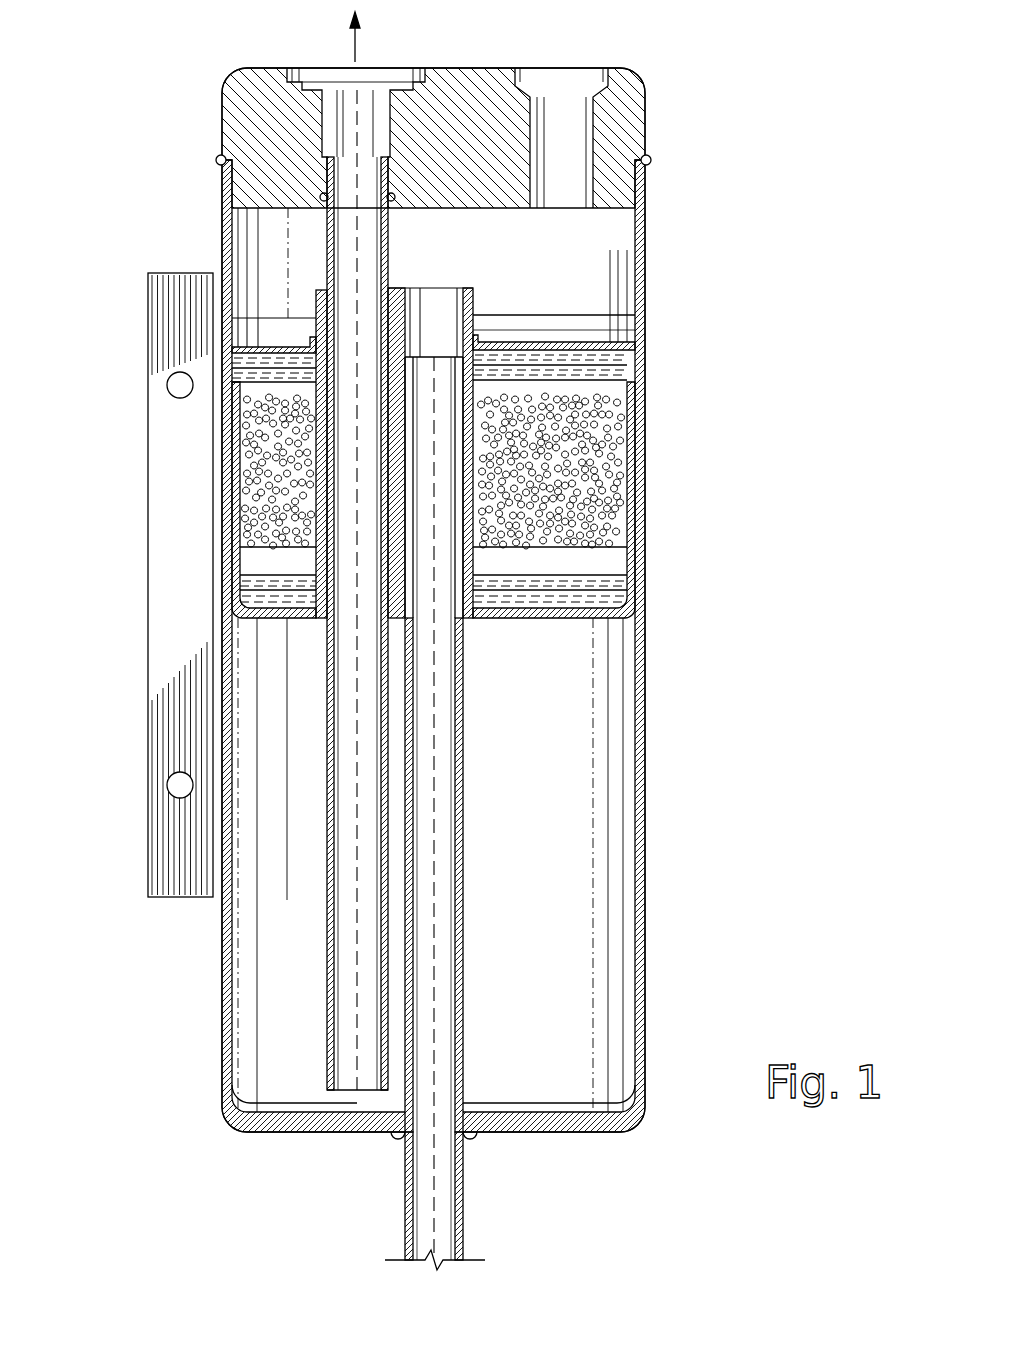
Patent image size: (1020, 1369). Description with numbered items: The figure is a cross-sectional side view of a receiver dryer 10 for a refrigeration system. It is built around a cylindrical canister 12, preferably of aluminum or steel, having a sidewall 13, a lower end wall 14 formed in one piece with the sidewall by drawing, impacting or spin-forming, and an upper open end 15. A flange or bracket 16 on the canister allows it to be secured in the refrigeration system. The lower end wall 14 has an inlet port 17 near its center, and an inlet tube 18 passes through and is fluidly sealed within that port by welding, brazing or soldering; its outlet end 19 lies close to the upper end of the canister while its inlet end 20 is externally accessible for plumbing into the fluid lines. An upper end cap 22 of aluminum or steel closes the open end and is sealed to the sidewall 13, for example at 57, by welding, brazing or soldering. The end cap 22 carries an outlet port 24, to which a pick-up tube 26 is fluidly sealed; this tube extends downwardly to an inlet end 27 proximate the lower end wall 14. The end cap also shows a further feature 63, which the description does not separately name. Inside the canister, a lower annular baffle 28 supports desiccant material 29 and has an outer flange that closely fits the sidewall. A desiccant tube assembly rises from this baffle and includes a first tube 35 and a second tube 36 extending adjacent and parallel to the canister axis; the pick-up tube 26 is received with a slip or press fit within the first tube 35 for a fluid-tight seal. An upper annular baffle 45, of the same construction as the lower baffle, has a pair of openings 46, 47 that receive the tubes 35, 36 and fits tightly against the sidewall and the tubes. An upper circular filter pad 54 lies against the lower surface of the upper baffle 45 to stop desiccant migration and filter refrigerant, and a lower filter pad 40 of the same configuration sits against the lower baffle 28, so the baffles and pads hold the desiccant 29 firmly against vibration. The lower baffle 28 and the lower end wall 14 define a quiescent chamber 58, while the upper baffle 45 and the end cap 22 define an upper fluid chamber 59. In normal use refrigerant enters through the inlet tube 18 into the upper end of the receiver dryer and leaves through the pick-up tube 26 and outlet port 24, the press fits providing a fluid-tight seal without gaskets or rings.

The receiver dryer 10 is at (802, 84).
The cylindrical canister 12 is at (646, 252).
The sidewall 13 is at (638, 790).
The lower end wall 14 is at (592, 1132).
The upper open end 15 is at (648, 163).
The flange or bracket 16 is at (175, 872).
The inlet port 17 is at (465, 1125).
The inlet tube 18 is at (463, 1007).
The outlet end of the inlet tube 19 is at (568, 358).
The inlet end of the inlet tube 20 is at (465, 1232).
The upper end cap 22 is at (268, 80).
The outlet port 24 is at (363, 95).
The pick-up tube 26 is at (327, 1005).
The inlet end of the pick-up tube 27 is at (360, 1092).
The lower annular baffle 28 is at (633, 586).
The desiccant material 29 is at (587, 497).
The first tube 35 is at (473, 307).
The second tube 36 is at (316, 306).
The lower filter pad 40 is at (582, 600).
The upper annular baffle 45 is at (575, 347).
The opening 46 is at (312, 372).
The opening 47 is at (471, 328).
The upper circular filter pad 54 is at (595, 383).
The seal location 57 is at (219, 160).
The quiescent chamber 58 is at (555, 885).
The upper fluid chamber 59 is at (275, 222).
The inlet port 63 is at (565, 100).